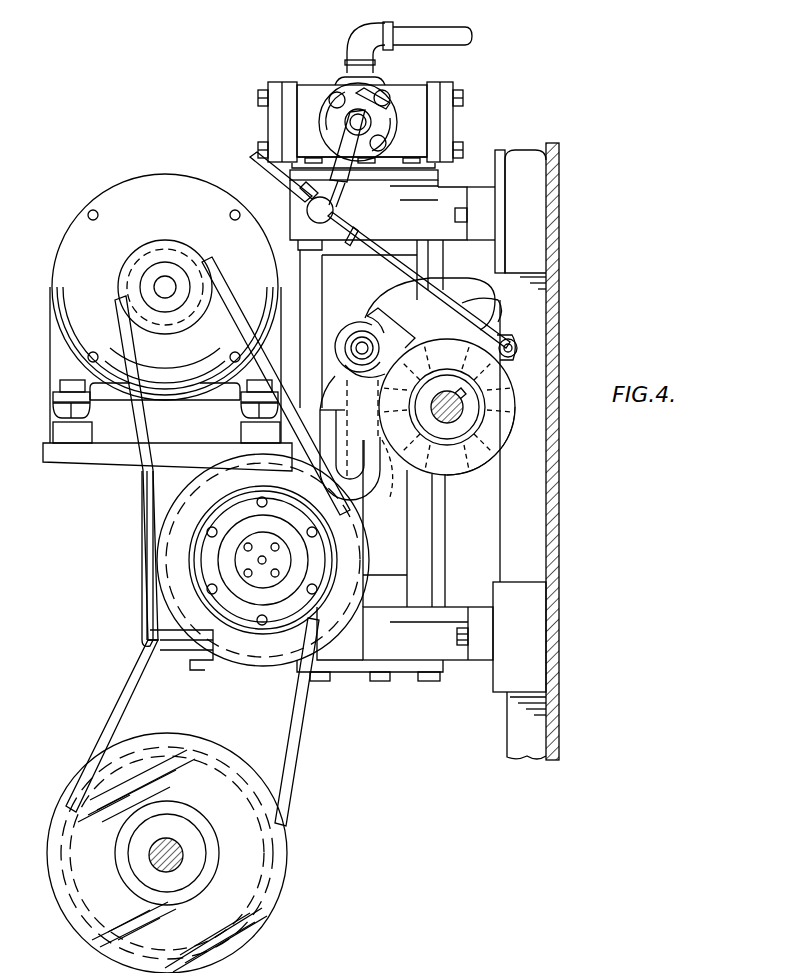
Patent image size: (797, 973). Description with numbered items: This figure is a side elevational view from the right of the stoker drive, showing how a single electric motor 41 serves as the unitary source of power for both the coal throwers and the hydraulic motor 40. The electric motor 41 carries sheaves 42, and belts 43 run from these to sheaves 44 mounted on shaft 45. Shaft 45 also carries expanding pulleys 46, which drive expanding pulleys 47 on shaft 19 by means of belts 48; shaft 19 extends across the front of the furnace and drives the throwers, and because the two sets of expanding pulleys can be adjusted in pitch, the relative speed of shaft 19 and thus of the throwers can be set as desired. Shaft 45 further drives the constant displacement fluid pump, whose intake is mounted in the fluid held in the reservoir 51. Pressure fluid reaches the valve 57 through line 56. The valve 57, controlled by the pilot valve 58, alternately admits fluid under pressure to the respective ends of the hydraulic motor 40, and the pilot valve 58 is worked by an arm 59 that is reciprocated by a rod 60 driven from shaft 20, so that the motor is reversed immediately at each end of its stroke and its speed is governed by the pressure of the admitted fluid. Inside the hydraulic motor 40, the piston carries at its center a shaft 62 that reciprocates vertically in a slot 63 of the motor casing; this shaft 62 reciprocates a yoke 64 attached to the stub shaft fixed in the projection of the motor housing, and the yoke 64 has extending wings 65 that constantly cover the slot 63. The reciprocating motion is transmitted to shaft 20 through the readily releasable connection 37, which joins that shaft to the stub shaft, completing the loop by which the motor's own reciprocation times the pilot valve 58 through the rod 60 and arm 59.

The shaft 19 is at (180, 846).
The shaft 20 is at (460, 404).
The readily releasable connection 37 is at (463, 462).
The hydraulic motor 40 is at (395, 533).
The electric motor 41 is at (167, 322).
The sheaves 42 is at (183, 253).
The belts 43 is at (145, 498).
The sheaves 44 is at (160, 578).
The shaft 45 is at (264, 556).
The expanding pulleys 46 is at (280, 637).
The expanding pulleys 47 is at (62, 796).
The belts 48 is at (118, 720).
The reservoir 51 is at (140, 624).
The line 56 is at (462, 28).
The valve 57 is at (408, 98).
The pilot valve 58 is at (341, 90).
The arm 59 is at (340, 188).
The rod 60 is at (485, 304).
The shaft 62 is at (358, 342).
The slot 63 is at (381, 476).
The yoke 64 is at (392, 347).
The wings 65 is at (465, 282).